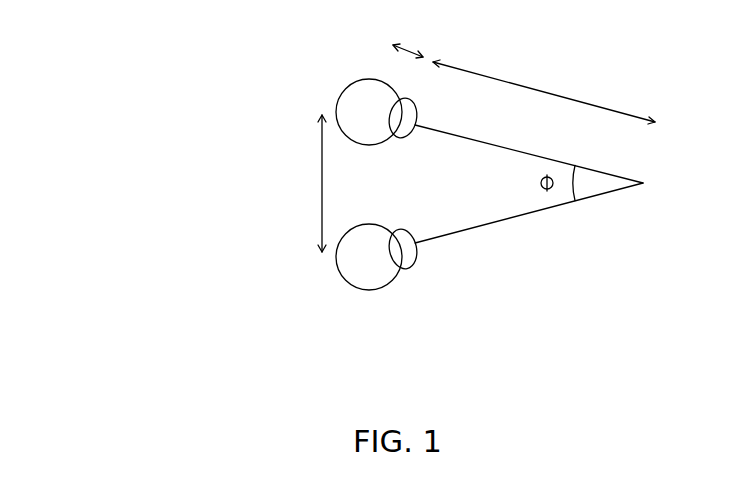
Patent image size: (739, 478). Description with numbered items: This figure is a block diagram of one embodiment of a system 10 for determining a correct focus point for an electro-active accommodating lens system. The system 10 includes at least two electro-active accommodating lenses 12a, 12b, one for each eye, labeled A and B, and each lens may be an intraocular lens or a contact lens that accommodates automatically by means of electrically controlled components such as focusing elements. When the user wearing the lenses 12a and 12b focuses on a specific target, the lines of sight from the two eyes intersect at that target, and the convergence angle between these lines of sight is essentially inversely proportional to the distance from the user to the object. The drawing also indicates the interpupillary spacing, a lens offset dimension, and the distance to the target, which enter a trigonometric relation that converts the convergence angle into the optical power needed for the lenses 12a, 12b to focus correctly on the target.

The system 10 is at (79, 157).
The electro-active accommodating lens 12a is at (316, 76).
The electro-active accommodating lens 12b is at (316, 291).